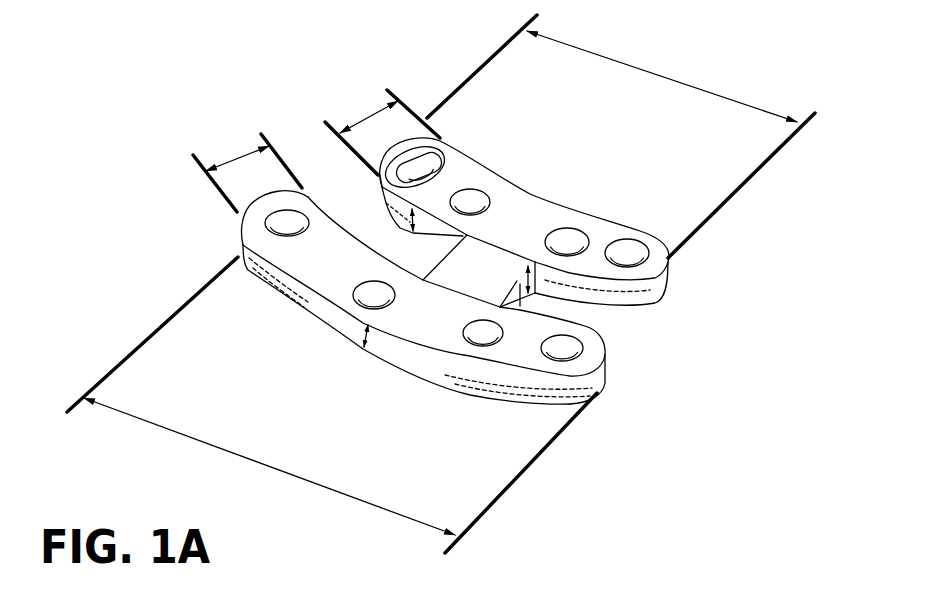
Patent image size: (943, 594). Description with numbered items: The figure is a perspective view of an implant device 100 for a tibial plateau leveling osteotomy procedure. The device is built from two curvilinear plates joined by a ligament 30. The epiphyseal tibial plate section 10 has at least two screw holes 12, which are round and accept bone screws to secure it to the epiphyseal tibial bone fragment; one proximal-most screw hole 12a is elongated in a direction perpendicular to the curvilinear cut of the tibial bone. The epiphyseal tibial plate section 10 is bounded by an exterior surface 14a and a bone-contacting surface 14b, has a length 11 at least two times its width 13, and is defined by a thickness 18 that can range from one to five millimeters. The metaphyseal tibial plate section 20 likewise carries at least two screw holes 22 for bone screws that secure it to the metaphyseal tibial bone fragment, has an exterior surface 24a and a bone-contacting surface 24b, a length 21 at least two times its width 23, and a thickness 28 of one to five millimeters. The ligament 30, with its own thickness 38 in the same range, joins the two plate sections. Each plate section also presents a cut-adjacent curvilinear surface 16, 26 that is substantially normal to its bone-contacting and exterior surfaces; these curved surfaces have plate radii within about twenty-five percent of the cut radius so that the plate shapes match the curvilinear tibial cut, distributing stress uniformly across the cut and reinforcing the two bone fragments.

The implant device 100 is at (210, 55).
The epiphyseal tibial plate section 10 is at (593, 230).
The length 11 is at (640, 67).
The screw holes 12 is at (471, 188).
The screw hole 12a is at (443, 160).
The width 13 is at (363, 118).
The exterior surface 14a is at (555, 205).
The bone-contacting surface 14b is at (393, 231).
The cut-adjacent curvilinear surface 16 is at (573, 292).
The thickness 18 is at (478, 283).
The metaphyseal tibial plate section 20 is at (590, 355).
The length 21 is at (272, 464).
The screw holes 22 is at (288, 238).
The width 23 is at (238, 157).
The exterior surface 24a is at (526, 352).
The bone-contacting surface 24b is at (416, 383).
The cut-adjacent curvilinear surface 26 is at (606, 328).
The thickness 28 is at (364, 333).
The ligament 30 is at (465, 268).
The thickness 38 is at (512, 285).